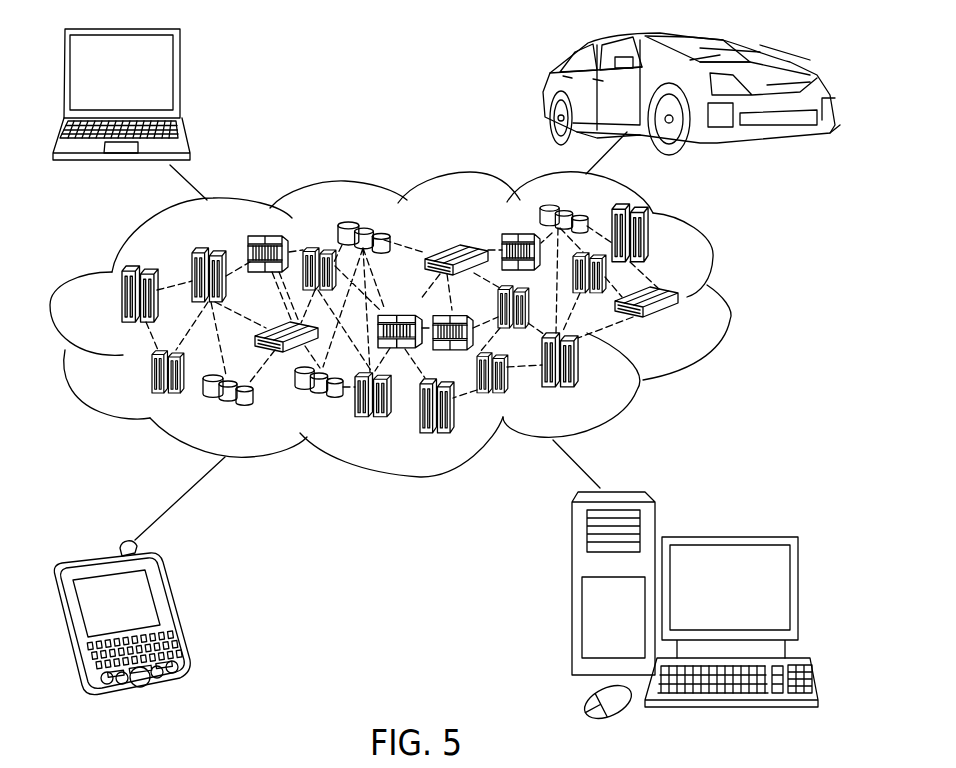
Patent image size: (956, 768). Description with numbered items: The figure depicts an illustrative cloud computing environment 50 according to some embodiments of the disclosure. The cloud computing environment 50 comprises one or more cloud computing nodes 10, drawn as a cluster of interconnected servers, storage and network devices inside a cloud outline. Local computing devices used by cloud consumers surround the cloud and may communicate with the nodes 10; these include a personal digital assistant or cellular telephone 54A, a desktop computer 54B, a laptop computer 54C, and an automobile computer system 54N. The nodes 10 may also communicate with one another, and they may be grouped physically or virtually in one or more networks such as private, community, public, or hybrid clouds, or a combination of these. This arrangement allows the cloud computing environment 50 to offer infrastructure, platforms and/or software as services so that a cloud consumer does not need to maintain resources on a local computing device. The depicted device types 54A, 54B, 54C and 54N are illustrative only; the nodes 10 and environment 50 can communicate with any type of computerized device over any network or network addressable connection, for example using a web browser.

The cloud computing nodes 10 is at (677, 324).
The cloud computing environment 50 is at (728, 303).
The personal digital assistant (PDA) or cellular telephone 54A is at (170, 612).
The desktop computer 54B is at (727, 535).
The laptop computer 54C is at (178, 82).
The automobile computer system 54N is at (547, 92).